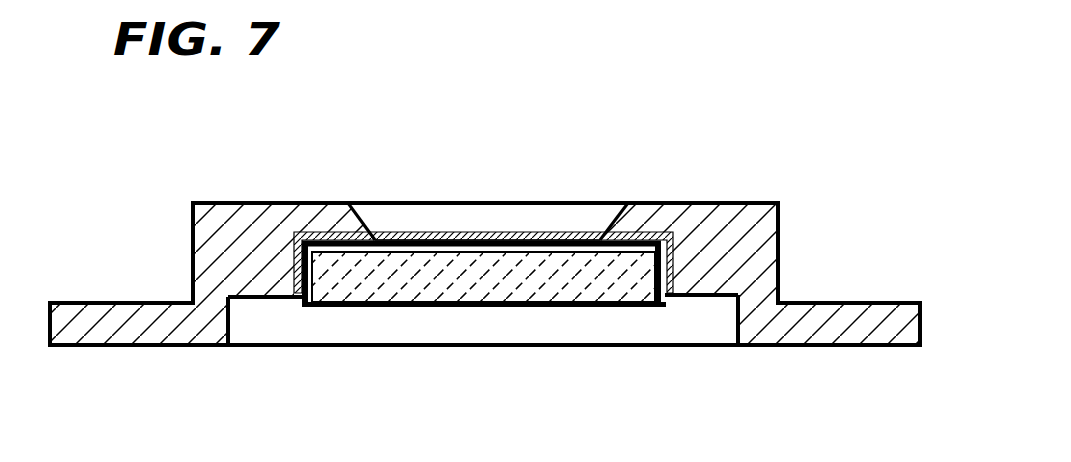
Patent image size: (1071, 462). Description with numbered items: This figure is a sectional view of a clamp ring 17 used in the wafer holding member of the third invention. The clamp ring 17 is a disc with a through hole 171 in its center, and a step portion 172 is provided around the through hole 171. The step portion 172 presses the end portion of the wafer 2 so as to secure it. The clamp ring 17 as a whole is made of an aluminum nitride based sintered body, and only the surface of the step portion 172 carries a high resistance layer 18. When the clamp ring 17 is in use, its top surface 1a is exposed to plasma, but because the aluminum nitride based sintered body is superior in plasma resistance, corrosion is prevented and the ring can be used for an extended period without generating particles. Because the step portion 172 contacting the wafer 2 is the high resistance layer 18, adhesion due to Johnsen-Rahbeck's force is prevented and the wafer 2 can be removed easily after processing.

The top surface 1a is at (223, 202).
The clamp ring 17 is at (718, 222).
The through hole 171 is at (387, 225).
The step portion 172 is at (583, 268).
The high resistance layer 18 is at (662, 240).
The wafer 2 is at (485, 306).